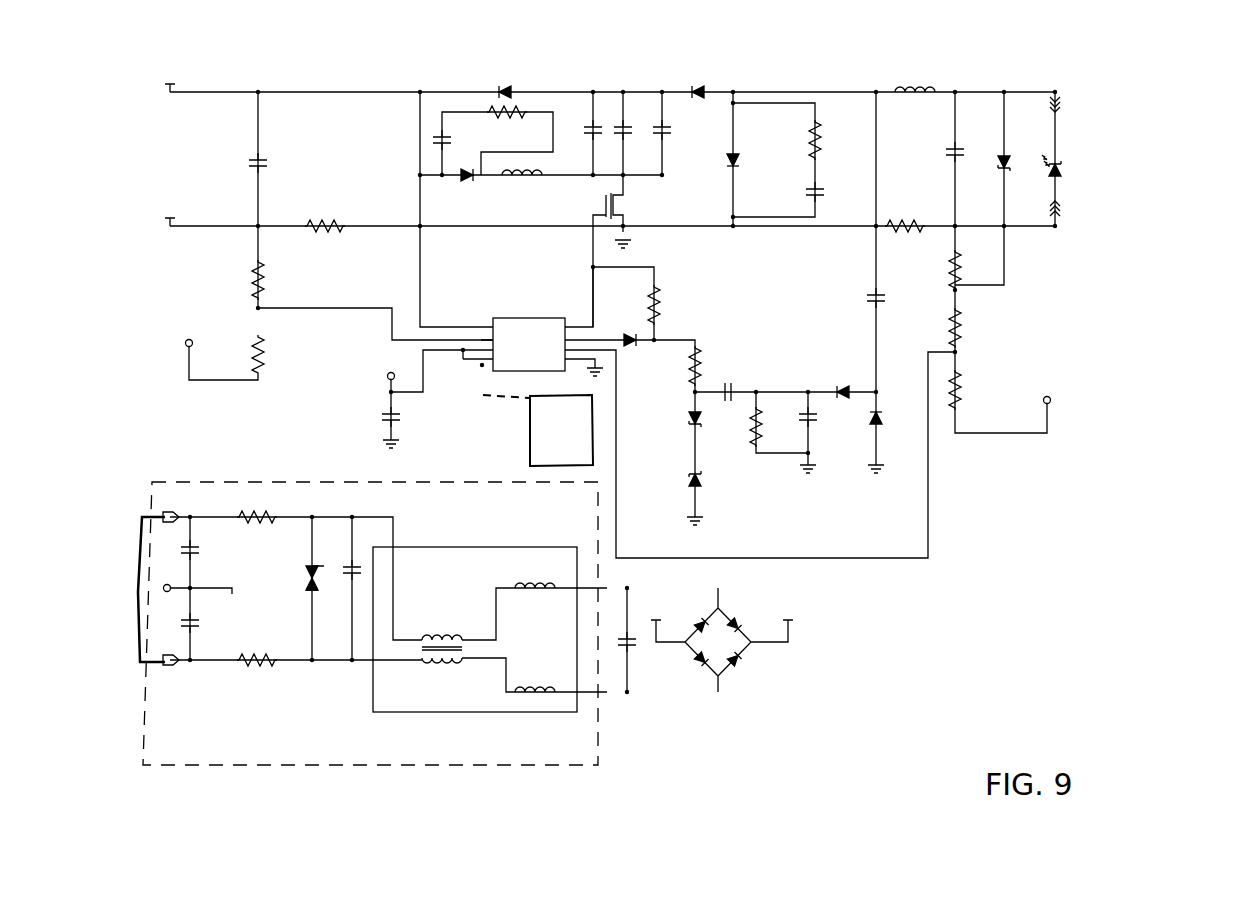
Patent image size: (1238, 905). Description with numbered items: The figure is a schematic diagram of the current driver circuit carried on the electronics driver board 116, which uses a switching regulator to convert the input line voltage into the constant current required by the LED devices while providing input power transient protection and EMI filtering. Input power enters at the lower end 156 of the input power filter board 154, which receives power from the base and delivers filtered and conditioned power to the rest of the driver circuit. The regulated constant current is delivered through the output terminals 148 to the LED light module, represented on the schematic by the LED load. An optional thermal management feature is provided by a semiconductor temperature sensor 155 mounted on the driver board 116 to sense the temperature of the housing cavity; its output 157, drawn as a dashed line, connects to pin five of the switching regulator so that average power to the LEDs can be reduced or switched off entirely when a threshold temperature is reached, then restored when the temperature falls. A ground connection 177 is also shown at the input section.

The electronics driver board 116 is at (990, 60).
The output terminals 148 is at (1085, 108).
The input power filter board 154 is at (338, 766).
The semiconductor temperature sensor 155 is at (530, 442).
The lower end 156 is at (134, 588).
The output of the temperature sensor 157 is at (486, 373).
The ground connection 177 is at (210, 602).